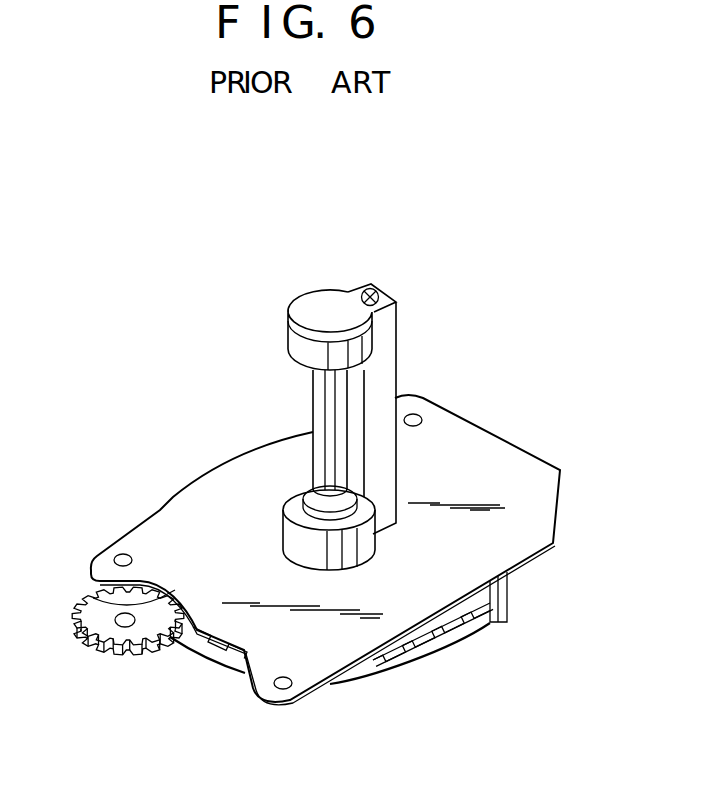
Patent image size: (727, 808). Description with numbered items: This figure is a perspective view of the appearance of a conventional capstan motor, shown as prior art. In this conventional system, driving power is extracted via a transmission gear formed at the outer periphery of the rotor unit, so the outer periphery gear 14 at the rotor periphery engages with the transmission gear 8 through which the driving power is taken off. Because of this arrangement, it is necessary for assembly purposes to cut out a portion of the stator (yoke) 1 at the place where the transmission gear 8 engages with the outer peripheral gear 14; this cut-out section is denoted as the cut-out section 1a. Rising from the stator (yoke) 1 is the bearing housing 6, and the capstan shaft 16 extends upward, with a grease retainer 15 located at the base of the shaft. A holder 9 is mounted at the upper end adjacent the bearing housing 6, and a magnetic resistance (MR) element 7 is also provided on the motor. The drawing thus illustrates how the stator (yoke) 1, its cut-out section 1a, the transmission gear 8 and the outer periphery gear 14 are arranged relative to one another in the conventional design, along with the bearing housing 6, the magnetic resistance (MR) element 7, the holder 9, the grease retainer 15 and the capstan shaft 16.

The stator (yoke) 1 is at (502, 490).
The cut-out section 1a is at (93, 598).
The bearing housing 6 is at (387, 341).
The magnetic resistance (MR) element 7 is at (507, 600).
The transmission gear 8 is at (115, 640).
The holder 9 is at (332, 303).
The outer periphery gear 14 is at (438, 647).
The grease retainer 15 is at (293, 503).
The capstan shaft 16 is at (318, 393).